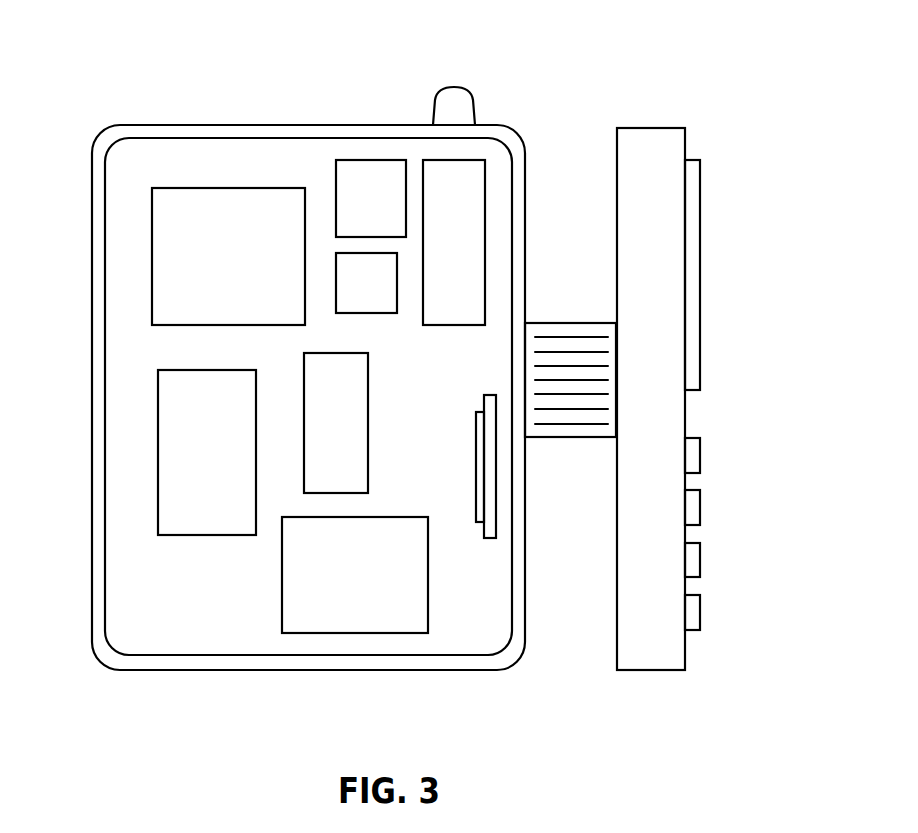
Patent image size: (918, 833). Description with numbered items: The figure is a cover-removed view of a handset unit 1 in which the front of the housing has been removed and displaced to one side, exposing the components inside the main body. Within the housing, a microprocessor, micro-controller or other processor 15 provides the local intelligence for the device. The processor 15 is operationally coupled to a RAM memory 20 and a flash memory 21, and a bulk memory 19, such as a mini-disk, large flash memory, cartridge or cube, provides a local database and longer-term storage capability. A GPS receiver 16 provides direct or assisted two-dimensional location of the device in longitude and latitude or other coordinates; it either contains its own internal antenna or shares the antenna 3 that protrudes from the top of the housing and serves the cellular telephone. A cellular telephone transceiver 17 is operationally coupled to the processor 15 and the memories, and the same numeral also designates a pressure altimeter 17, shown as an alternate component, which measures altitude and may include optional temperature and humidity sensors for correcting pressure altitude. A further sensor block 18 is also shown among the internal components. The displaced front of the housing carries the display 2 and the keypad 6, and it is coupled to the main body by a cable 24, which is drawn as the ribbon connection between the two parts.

The handset unit 1 is at (182, 120).
The display 2 is at (708, 188).
The antenna 3 is at (483, 105).
The keypad 6 is at (703, 608).
The processor 15 is at (273, 210).
The GPS receiver 16 is at (372, 150).
The cellular telephone transceiver 17 is at (492, 190).
The sensor 18 is at (150, 425).
The bulk memory 19 is at (277, 583).
The RAM memory 20 is at (293, 362).
The flash memory 21 is at (382, 318).
The cable 24 is at (557, 450).